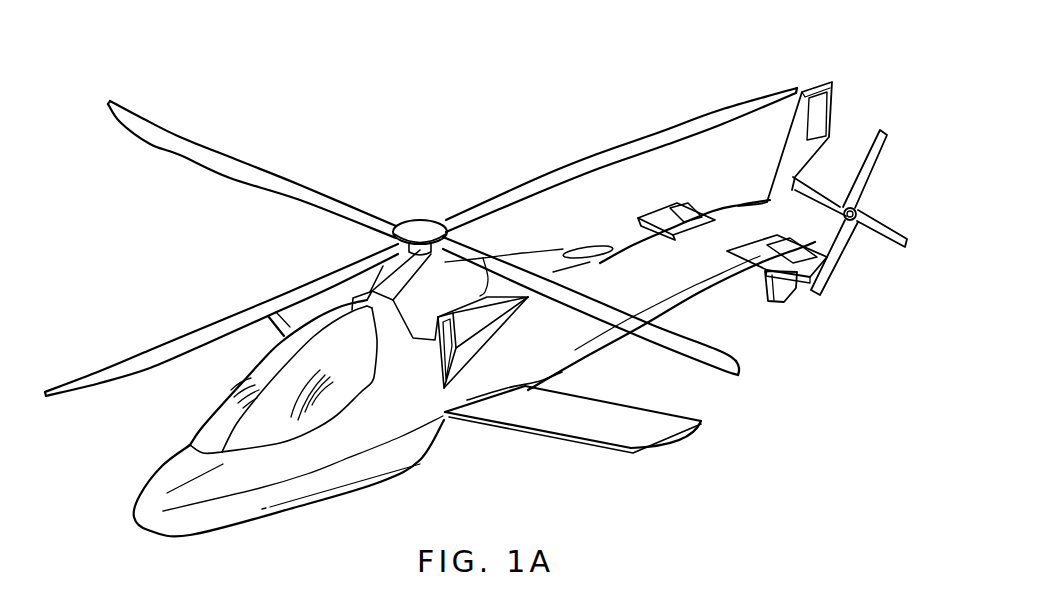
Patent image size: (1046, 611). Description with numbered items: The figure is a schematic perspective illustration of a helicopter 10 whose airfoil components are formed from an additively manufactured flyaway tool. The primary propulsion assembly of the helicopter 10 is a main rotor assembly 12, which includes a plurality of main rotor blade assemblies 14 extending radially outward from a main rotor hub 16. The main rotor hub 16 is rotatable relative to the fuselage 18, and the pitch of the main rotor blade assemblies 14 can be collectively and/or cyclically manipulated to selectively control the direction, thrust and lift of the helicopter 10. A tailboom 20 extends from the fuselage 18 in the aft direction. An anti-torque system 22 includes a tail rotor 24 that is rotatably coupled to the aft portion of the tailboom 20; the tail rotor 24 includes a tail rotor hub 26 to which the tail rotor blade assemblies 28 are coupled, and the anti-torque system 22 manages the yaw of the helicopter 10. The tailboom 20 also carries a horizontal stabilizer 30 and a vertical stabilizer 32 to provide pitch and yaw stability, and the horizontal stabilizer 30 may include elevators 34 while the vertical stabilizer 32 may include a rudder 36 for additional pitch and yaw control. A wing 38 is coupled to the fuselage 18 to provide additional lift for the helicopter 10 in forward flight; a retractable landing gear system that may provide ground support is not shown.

The helicopter 10 is at (180, 249).
The main rotor assembly 12 is at (432, 216).
The main rotor blade assemblies 14 is at (108, 100).
The main rotor hub 16 is at (410, 226).
The fuselage 18 is at (193, 537).
The tailboom 20 is at (712, 277).
The anti-torque system 22 is at (847, 168).
The tail rotor 24 is at (860, 208).
The tail rotor hub 26 is at (860, 208).
The tail rotor blade assemblies 28 is at (881, 246).
The horizontal stabilizer 30 is at (638, 216).
The vertical stabilizer 32 is at (786, 300).
The elevators 34 is at (694, 209).
The rudder 36 is at (833, 98).
The wing 38 is at (582, 450).